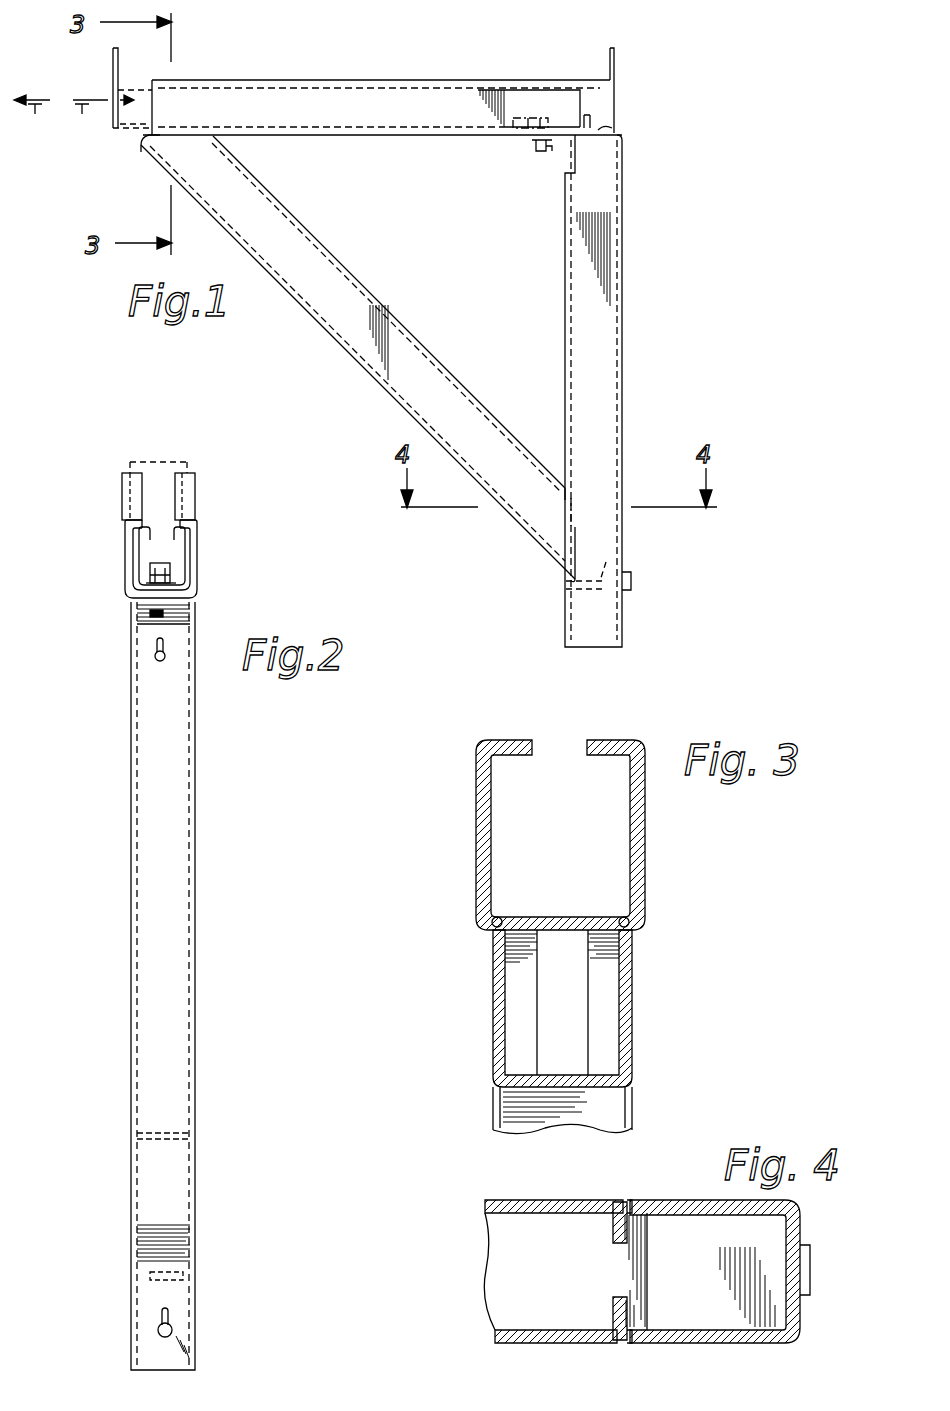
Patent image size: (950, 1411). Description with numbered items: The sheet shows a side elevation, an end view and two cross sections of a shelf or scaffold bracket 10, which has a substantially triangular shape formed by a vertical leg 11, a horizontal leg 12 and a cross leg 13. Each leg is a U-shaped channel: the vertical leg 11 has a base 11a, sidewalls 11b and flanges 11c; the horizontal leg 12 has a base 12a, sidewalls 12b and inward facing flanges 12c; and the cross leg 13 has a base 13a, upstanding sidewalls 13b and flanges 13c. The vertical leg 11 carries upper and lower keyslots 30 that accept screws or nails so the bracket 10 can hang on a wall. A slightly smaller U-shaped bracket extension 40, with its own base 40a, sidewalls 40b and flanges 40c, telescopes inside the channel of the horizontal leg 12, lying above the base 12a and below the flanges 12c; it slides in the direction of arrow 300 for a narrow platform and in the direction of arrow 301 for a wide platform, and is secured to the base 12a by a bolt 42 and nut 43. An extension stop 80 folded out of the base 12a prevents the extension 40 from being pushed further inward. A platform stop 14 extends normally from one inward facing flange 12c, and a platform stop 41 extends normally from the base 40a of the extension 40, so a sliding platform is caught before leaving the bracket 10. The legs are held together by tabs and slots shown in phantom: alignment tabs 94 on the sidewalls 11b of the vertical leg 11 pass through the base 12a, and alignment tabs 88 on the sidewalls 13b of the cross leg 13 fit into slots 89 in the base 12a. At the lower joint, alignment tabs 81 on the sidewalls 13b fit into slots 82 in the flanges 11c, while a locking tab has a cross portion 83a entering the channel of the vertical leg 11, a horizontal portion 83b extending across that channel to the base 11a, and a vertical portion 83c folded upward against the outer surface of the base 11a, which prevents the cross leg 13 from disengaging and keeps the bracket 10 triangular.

In FIG. 1, the bracket 10 is at (274, 309).
In FIG. 1, the vertical leg 11 is at (608, 340).
In FIG. 2, the vertical leg 11 is at (148, 1306).
In FIG. 4, the base of vertical leg 11a is at (800, 1228).
In FIG. 4, the sidewalls of vertical leg 11b is at (710, 1199).
In FIG. 4, the flanges of vertical leg 11c is at (613, 1300).
In FIG. 1, the horizontal leg 12 is at (374, 118).
In FIG. 2, the horizontal leg 12 is at (192, 562).
In FIG. 3, the horizontal leg 12 is at (560, 835).
In FIG. 3, the base of horizontal leg 12a is at (570, 932).
In FIG. 3, the sidewalls of horizontal leg 12b is at (476, 850).
In FIG. 3, the flanges of horizontal leg 12c is at (502, 738).
In FIG. 1, the cross leg 13 is at (358, 325).
In FIG. 2, the cross leg 13 is at (197, 770).
In FIG. 3, the cross leg 13 is at (562, 1032).
In FIG. 3, the base of cross leg 13a is at (585, 1088).
In FIG. 4, the base of cross leg 13a is at (488, 1265).
In FIG. 3, the sidewalls of cross leg 13b is at (493, 1013).
In FIG. 4, the sidewalls of cross leg 13b is at (510, 1199).
In FIG. 3, the flanges of cross leg 13c is at (590, 1018).
In FIG. 1, the platform stop 14 is at (611, 52).
In FIG. 2, the platform stop 14 is at (196, 488).
In FIG. 2, the keyslots 30 is at (153, 657).
In FIG. 1, the bracket extension 40 is at (112, 90).
In FIG. 2, the bracket extension 40 is at (205, 532).
In FIG. 2, the base of extension 40a is at (196, 600).
In FIG. 2, the sidewalls of extension 40b is at (132, 553).
In FIG. 2, the flanges of extension 40c is at (132, 507).
In FIG. 1, the platform stop 41 is at (112, 72).
In FIG. 2, the platform stop 41 is at (168, 463).
In FIG. 1, the bolt 42 is at (512, 132).
In FIG. 2, the bolt 42 is at (148, 577).
In FIG. 1, the nut 43 is at (530, 148).
In FIG. 2, the nut 43 is at (150, 612).
In FIG. 1, the extension stop 80 is at (592, 118).
In FIG. 2, the extension stop 80 is at (158, 563).
In FIG. 1, the alignment tabs 81 is at (568, 518).
In FIG. 4, the alignment tabs 81 is at (620, 1201).
In FIG. 4, the slots 82 is at (630, 1202).
In FIG. 1, the cross portion of locking tab 83a is at (566, 585).
In FIG. 4, the cross portion of locking tab 83a is at (636, 1340).
In FIG. 1, the horizontal portion of locking tab 83b is at (608, 576).
In FIG. 4, the horizontal portion of locking tab 83b is at (712, 1277).
In FIG. 1, the vertical portion of locking tab 83c is at (632, 580).
In FIG. 4, the vertical portion of locking tab 83c is at (811, 1268).
In FIG. 1, the alignment tabs 88 is at (137, 144).
In FIG. 3, the alignment tabs 88 is at (492, 922).
In FIG. 3, the slots 89 is at (500, 917).
In FIG. 1, the alignment tabs 94 is at (604, 130).
In FIG. 1, the arrow 300 is at (99, 118).
In FIG. 1, the arrow 301 is at (27, 118).